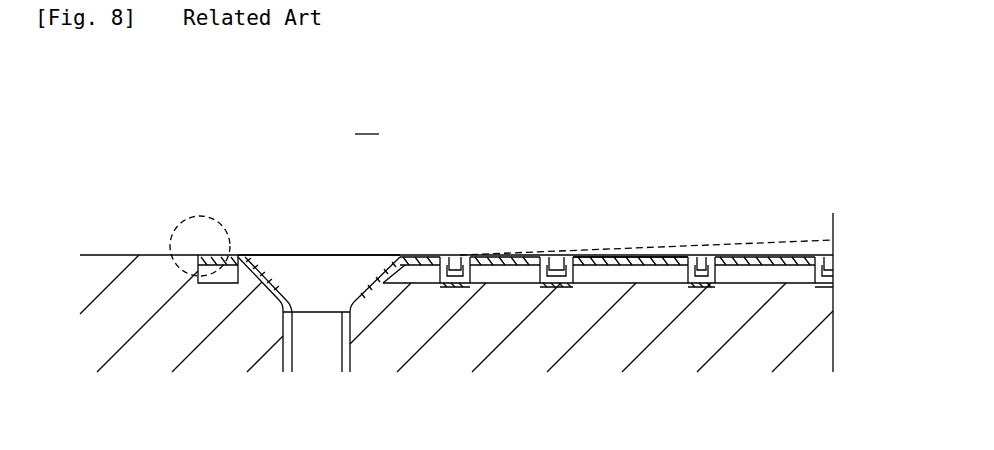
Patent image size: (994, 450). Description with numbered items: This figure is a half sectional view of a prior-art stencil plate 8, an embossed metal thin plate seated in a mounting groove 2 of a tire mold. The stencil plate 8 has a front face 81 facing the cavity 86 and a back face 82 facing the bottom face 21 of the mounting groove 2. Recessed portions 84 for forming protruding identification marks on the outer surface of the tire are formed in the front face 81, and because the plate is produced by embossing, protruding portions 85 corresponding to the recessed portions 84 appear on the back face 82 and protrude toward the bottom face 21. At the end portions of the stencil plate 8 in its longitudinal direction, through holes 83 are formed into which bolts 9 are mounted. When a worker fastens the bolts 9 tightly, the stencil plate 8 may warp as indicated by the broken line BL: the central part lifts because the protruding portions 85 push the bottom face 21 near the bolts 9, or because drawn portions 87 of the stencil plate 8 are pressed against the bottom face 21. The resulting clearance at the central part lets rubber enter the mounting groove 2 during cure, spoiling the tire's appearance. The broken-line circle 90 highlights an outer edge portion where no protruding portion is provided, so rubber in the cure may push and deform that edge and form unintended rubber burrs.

The mounting groove 2 is at (663, 300).
The bottom face 21 is at (585, 285).
The stencil plate 8 is at (631, 230).
The front face 81 is at (420, 260).
The back face 82 is at (508, 285).
The through holes 83 is at (283, 314).
The recessed portions 84 is at (452, 256).
The protruding portions 85 is at (446, 282).
The cavity 86 is at (585, 184).
The drawn portions 87 is at (372, 277).
The bolts 9 is at (298, 254).
The broken-line circle 90 is at (189, 218).
The broken line BL is at (745, 240).